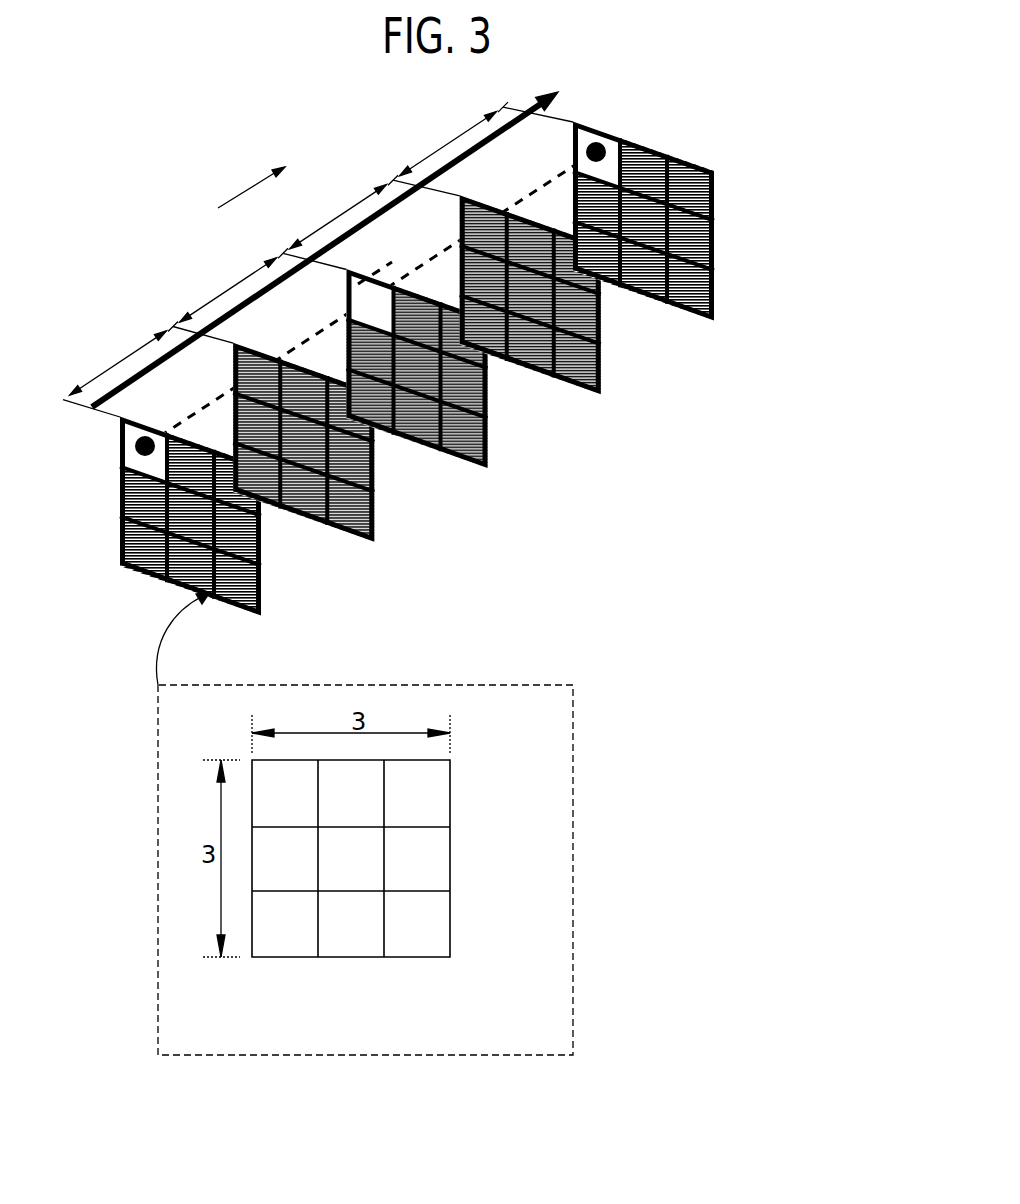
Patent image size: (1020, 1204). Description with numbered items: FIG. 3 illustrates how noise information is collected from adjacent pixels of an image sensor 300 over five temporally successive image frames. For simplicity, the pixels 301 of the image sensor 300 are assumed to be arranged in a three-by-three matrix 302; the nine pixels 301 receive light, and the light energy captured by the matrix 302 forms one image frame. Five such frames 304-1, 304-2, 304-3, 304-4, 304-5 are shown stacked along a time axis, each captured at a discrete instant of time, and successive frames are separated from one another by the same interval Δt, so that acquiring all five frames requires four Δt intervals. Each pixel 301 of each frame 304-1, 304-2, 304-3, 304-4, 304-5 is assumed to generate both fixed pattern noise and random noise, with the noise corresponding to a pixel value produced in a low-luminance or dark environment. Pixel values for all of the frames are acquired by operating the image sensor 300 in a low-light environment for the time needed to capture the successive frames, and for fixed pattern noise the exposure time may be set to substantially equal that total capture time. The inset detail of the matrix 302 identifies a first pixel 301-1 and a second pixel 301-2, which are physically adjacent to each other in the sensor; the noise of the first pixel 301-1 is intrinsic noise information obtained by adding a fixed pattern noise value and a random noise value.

The image sensor 300 is at (710, 95).
The pixels 301 is at (307, 780).
The first pixel 301-1 is at (438, 860).
The second pixel 301-2 is at (438, 920).
The 3×3 pixel matrix 302 is at (452, 762).
The first image frame 304-1 is at (262, 580).
The second image frame 304-2 is at (375, 508).
The third image frame 304-3 is at (488, 444).
The fourth image frame 304-4 is at (601, 370).
The fifth image frame 304-5 is at (715, 300).